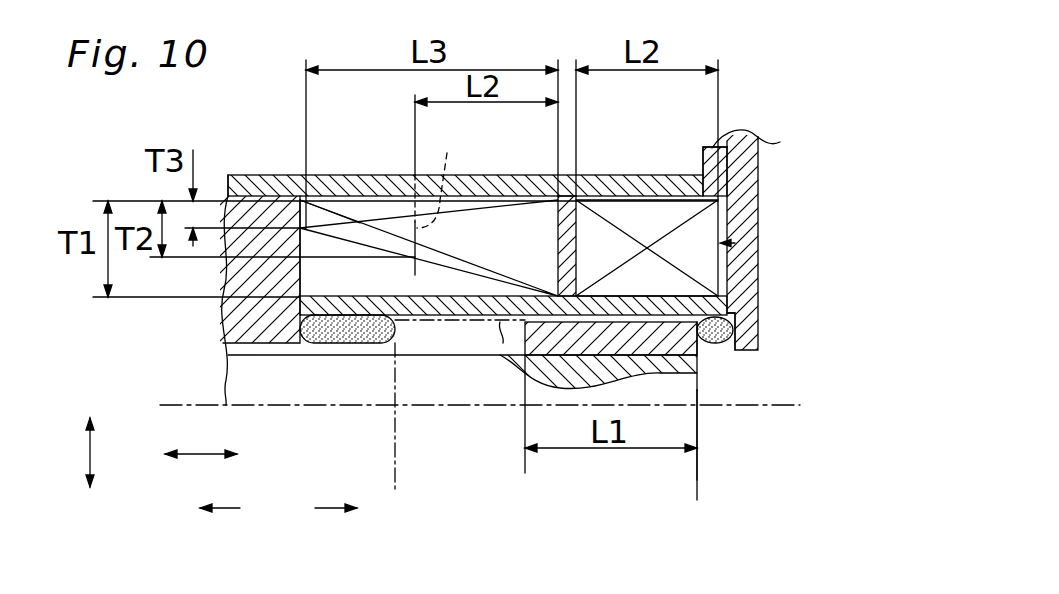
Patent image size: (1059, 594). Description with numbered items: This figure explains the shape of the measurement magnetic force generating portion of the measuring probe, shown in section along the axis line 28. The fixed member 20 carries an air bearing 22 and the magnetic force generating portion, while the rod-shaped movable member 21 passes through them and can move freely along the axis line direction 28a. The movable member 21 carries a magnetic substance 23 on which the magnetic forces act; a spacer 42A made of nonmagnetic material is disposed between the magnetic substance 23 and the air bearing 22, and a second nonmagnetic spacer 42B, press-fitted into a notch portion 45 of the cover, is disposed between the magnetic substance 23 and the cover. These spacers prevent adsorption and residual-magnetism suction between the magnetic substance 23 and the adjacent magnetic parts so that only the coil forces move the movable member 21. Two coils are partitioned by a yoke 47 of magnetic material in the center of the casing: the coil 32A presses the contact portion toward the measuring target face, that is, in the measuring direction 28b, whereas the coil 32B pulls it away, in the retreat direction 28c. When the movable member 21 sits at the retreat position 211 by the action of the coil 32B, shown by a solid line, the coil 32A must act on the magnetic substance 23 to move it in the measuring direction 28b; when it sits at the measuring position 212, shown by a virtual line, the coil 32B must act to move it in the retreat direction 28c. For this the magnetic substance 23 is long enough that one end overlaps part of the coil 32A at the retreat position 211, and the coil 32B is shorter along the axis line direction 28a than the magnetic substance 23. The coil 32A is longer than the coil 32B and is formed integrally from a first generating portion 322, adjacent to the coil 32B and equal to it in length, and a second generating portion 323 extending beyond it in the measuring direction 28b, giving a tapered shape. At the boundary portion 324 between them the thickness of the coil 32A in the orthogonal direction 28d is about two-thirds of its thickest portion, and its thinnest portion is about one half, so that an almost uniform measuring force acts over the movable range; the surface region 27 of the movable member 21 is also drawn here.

The fixed member 20 is at (676, 137).
The movable member 21 is at (297, 385).
The air bearing 22 is at (225, 312).
The magnetic substance 23 is at (697, 350).
The raised portion of shaft 27 is at (697, 389).
The axis line 28 is at (763, 406).
The axis line direction 28a is at (203, 453).
The measuring direction 28b is at (225, 508).
The retreat direction 28c is at (335, 508).
The orthogonal direction 28d is at (91, 445).
The coil 32A is at (388, 194).
The coil 32B is at (758, 225).
The spacer 42A is at (300, 320).
The spacer 42B is at (758, 295).
The notch portion 45 is at (758, 323).
The yoke 47 is at (578, 243).
The retreat position 211 is at (697, 480).
The measuring position 212 is at (390, 463).
The first generating portion 322 is at (511, 238).
The second generating portion 323 is at (353, 218).
The boundary portion 324 is at (451, 173).